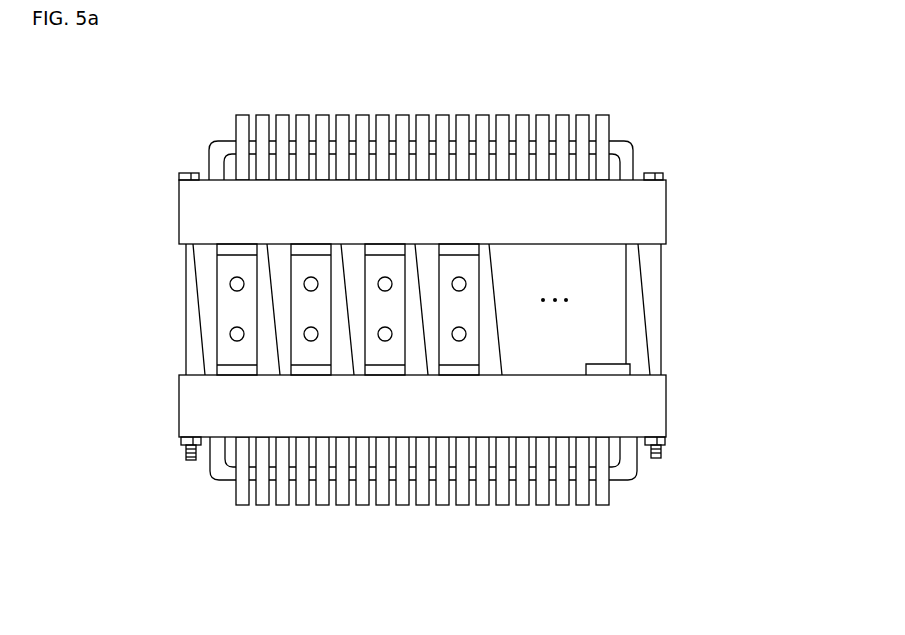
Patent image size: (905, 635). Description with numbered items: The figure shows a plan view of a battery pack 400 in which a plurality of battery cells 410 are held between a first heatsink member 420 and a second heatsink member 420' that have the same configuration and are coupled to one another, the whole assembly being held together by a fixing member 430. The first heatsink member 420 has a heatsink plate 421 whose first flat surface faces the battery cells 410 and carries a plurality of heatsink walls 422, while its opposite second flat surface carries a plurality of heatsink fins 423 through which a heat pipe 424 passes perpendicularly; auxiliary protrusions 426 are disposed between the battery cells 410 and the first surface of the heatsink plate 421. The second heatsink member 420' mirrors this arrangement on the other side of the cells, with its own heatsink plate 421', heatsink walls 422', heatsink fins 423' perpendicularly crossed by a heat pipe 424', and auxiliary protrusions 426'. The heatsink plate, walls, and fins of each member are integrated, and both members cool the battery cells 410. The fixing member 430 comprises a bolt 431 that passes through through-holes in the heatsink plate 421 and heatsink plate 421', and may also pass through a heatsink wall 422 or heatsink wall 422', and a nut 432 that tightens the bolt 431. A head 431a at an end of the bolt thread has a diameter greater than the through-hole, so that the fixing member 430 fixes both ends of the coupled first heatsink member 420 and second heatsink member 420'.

The battery pack 400 is at (88, 94).
The battery cells 410 is at (223, 308).
The first heatsink member 420 is at (126, 396).
The second heatsink member 420' is at (119, 225).
The heatsink plate 421 is at (391, 406).
The heatsink plate 421' is at (391, 212).
The heatsink walls 422 is at (161, 355).
The heatsink walls 422' is at (160, 266).
The heatsink fins 423 is at (363, 471).
The heatsink fins 423' is at (363, 147).
The heat pipe 424 is at (377, 458).
The heat pipe 424' is at (375, 162).
The auxiliary protrusions 426 is at (298, 365).
The auxiliary protrusions 426' is at (298, 258).
The fixing member 430 is at (751, 258).
The bolt 431 is at (661, 452).
The head 431a is at (666, 176).
The nut 432 is at (668, 436).